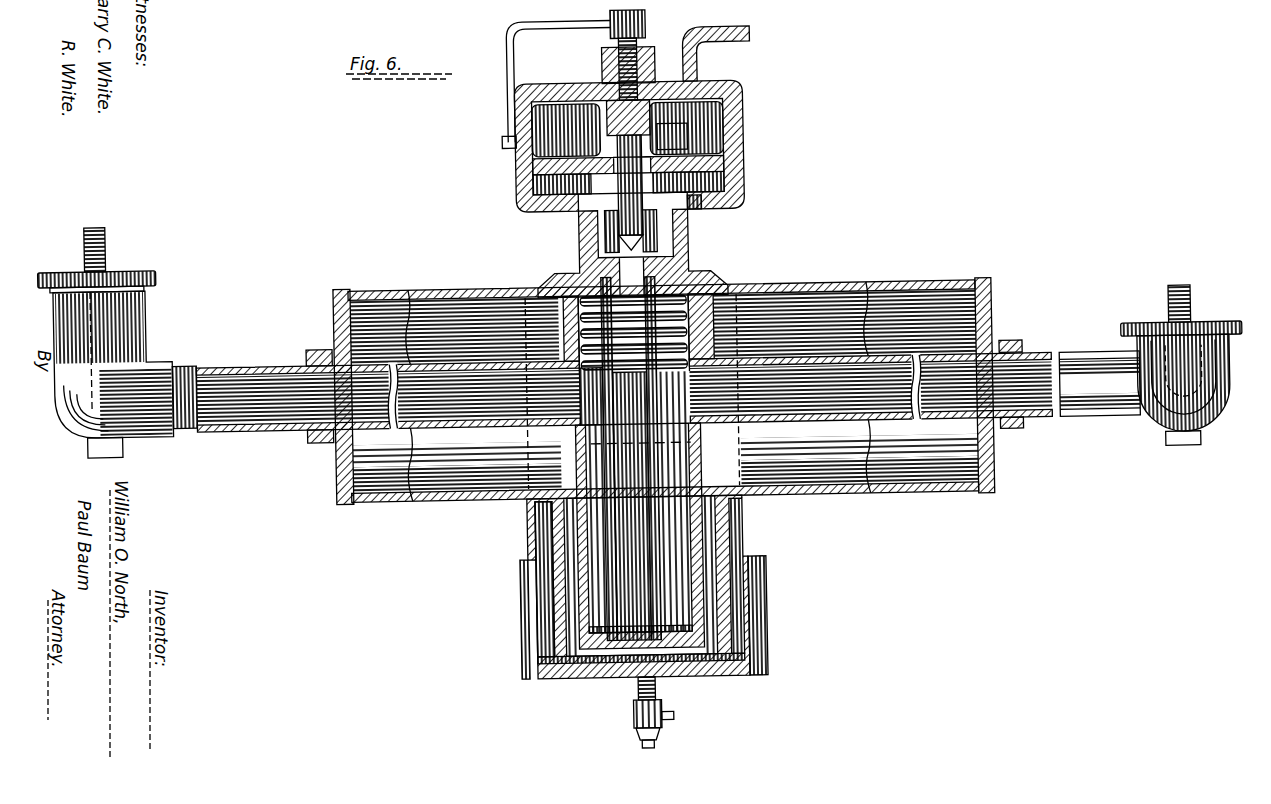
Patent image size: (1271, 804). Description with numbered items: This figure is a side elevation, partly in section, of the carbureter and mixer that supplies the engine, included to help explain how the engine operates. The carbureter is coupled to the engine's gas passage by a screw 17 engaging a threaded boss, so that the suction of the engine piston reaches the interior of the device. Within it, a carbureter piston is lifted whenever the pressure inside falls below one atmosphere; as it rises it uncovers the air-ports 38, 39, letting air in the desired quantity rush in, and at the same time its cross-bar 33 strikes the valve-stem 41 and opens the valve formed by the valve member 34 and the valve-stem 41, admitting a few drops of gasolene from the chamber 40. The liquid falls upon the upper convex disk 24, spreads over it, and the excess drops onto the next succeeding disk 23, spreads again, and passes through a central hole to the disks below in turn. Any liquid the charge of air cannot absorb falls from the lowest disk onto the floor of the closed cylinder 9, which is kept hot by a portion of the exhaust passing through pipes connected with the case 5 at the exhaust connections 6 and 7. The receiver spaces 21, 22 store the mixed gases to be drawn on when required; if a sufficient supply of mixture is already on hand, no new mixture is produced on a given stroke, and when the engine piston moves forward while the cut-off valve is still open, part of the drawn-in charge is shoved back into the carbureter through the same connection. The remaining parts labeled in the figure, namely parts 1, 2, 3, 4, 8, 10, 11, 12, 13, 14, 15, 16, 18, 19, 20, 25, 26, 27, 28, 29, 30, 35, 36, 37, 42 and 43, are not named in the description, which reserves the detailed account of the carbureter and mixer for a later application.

The valve body casing 1 is at (990, 285).
The left end cap of casing 2 is at (345, 285).
The right pipe nut 3 is at (1018, 350).
The left pipe nut 4 is at (330, 346).
The case 5 is at (760, 530).
The exhaust connection 6 is at (764, 574).
The exhaust connection 7 is at (517, 576).
The bottom jacket plate 8 is at (531, 655).
The closed cylinder 9 is at (559, 598).
The valve housing neck 10 is at (748, 176).
The right inner partition wall 11 is at (712, 326).
The left inner partition wall 12 is at (568, 350).
The upper valve housing 13 is at (748, 112).
The right pipe 14 is at (915, 400).
The left pipe 15 is at (388, 404).
The right end cap 16 is at (1230, 358).
The screw 17 is at (1190, 296).
The left elbow fitting 18 is at (142, 309).
The left elbow stem 19 is at (110, 232).
The cup bottom 20 is at (637, 624).
The receiver space 21 is at (860, 460).
The receiver space 22 is at (457, 467).
The disk 23 is at (580, 374).
The upper convex disk 24 is at (631, 459).
The inner cylinder 25 is at (639, 540).
The valve stem 26 is at (641, 506).
The inner cylinder space 27 is at (674, 501).
The lower threaded stem 28 is at (630, 692).
The drain nozzle 29 is at (668, 716).
The partition plate 30 is at (748, 148).
The cross-bar 33 is at (678, 246).
The valve member 34 is at (605, 226).
The adjusting knob 35 is at (652, 28).
The bypass tube 36 is at (520, 68).
The right lower chamber piece 37 is at (688, 178).
The air-port 38 is at (568, 208).
The air-port 39 is at (702, 210).
The chamber 40 is at (686, 124).
The valve-stem 41 is at (684, 130).
The left chamber cylinder 42 is at (600, 142).
The inlet pipe 43 is at (704, 70).